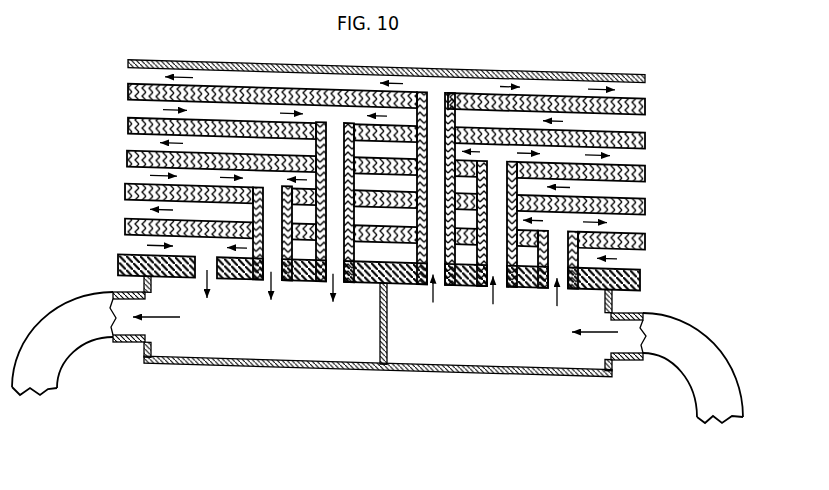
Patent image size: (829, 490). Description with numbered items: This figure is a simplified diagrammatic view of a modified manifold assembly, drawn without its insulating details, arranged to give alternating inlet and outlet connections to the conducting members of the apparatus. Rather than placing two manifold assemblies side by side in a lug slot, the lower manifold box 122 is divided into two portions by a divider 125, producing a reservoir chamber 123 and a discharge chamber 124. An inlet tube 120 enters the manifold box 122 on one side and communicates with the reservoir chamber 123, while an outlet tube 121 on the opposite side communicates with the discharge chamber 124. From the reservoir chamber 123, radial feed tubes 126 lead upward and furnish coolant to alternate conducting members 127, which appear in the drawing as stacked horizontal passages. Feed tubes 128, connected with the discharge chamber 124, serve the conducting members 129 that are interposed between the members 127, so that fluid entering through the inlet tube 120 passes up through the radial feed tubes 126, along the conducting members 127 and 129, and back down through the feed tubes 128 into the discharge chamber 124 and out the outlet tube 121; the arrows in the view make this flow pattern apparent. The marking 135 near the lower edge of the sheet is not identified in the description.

The inlet tube 120 is at (690, 327).
The outlet tube 121 is at (63, 302).
The manifold box 122 is at (320, 368).
The reservoir chamber 123 is at (494, 341).
The discharge chamber 124 is at (279, 337).
The divider 125 is at (378, 327).
The radial feed tubes 126 is at (497, 183).
The conducting members 127 is at (565, 157).
The feed tubes 128 is at (325, 277).
The conducting members 129 is at (213, 173).
The sheet numeral 135 is at (572, 480).